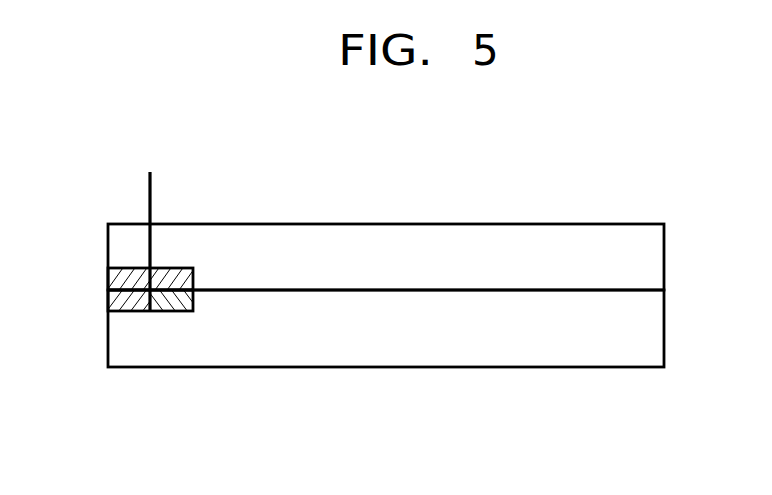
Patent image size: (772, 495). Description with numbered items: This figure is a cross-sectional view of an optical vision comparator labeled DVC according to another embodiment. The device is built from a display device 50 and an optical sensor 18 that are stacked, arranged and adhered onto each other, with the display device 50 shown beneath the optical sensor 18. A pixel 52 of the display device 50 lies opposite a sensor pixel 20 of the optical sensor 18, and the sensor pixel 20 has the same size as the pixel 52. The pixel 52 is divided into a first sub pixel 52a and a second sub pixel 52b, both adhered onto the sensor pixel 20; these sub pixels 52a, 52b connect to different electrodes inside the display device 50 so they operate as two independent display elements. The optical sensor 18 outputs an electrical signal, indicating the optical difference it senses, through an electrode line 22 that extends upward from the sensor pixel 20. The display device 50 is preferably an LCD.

The device DVC is at (558, 192).
The optical sensor 18 is at (653, 258).
The display device 50 is at (653, 328).
The sensor pixel 20 is at (108, 276).
The electrode line 22 is at (147, 190).
The first sub pixel 52a is at (126, 312).
The second sub pixel 52b is at (172, 312).
The pixel 52 is at (118, 432).